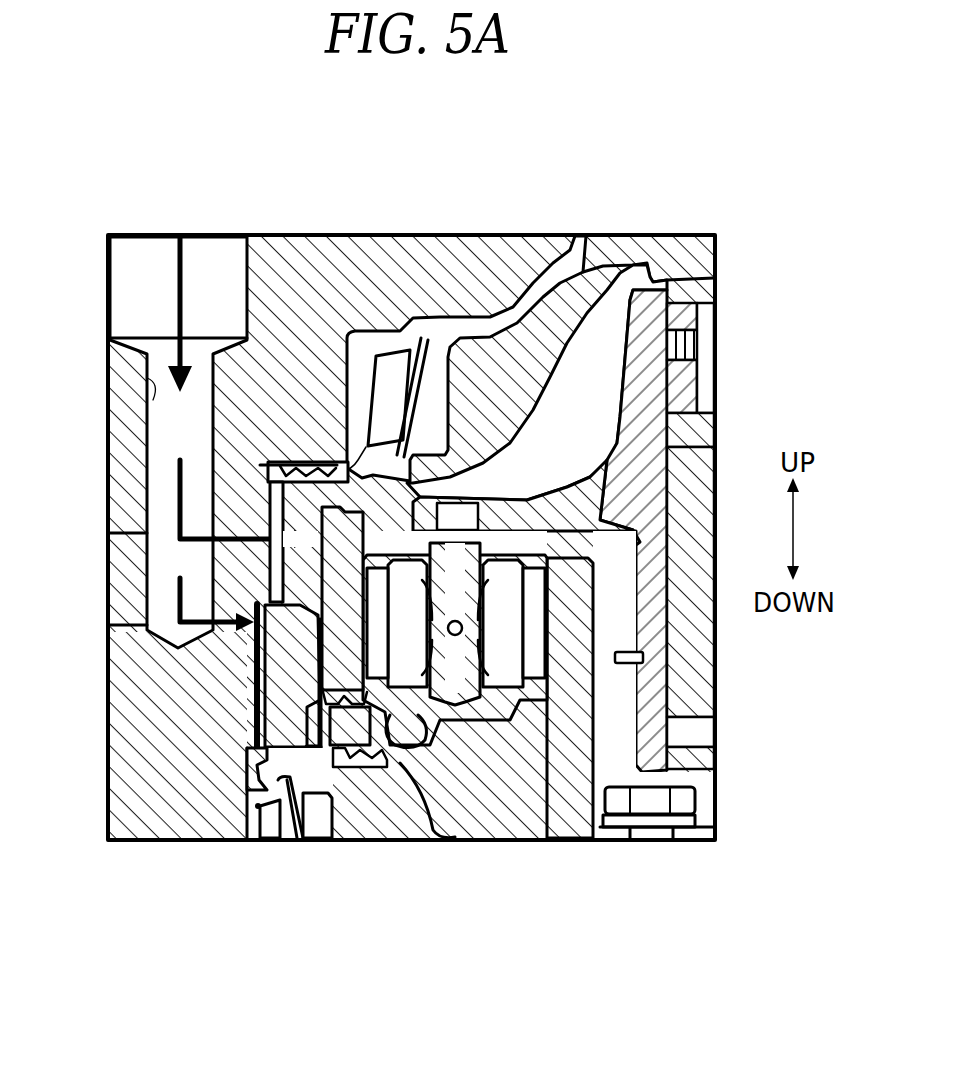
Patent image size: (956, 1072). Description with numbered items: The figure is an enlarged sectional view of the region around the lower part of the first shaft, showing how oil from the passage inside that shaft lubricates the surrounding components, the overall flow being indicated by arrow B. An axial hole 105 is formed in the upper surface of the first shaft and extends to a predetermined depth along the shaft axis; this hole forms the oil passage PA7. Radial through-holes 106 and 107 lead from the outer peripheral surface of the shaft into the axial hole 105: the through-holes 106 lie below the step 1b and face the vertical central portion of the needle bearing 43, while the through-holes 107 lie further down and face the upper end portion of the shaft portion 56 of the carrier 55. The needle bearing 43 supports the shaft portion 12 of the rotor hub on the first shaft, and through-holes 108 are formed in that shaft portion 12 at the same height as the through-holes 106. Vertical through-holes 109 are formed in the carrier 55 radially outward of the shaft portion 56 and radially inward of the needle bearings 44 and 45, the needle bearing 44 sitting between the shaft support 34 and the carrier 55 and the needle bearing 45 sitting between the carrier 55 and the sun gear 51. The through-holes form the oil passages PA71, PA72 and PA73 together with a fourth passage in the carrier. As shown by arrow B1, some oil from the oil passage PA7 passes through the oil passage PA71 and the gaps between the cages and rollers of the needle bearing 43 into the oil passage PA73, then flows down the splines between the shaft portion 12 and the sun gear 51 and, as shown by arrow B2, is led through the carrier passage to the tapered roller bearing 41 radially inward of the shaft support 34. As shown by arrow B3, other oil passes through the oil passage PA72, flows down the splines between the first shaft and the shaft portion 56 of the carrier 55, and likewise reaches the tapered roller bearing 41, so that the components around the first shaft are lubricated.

The oil passage PA7 is at (218, 270).
The oil passage PA71 is at (283, 535).
The oil passage PA72 is at (205, 640).
The oil passage PA73 is at (431, 480).
The axial hole 105 is at (147, 377).
The through-holes 106 is at (132, 545).
The through-holes 107 is at (130, 636).
The shaft portion 12 is at (290, 578).
The needle bearing 43 is at (284, 483).
The step 1b is at (393, 446).
The through-holes 108 is at (452, 483).
The through-holes 109 is at (357, 745).
The sun gear 51 is at (385, 722).
The needle bearing 45 is at (393, 722).
The shaft portion 56 is at (278, 693).
The tapered roller bearing 41 is at (280, 823).
The shaft support 34 is at (352, 823).
The carrier 55 is at (380, 760).
The needle bearing 44 is at (440, 828).
The arrow B is at (172, 314).
The arrow B1 is at (246, 504).
The arrow B2 is at (283, 691).
The arrow B3 is at (217, 621).